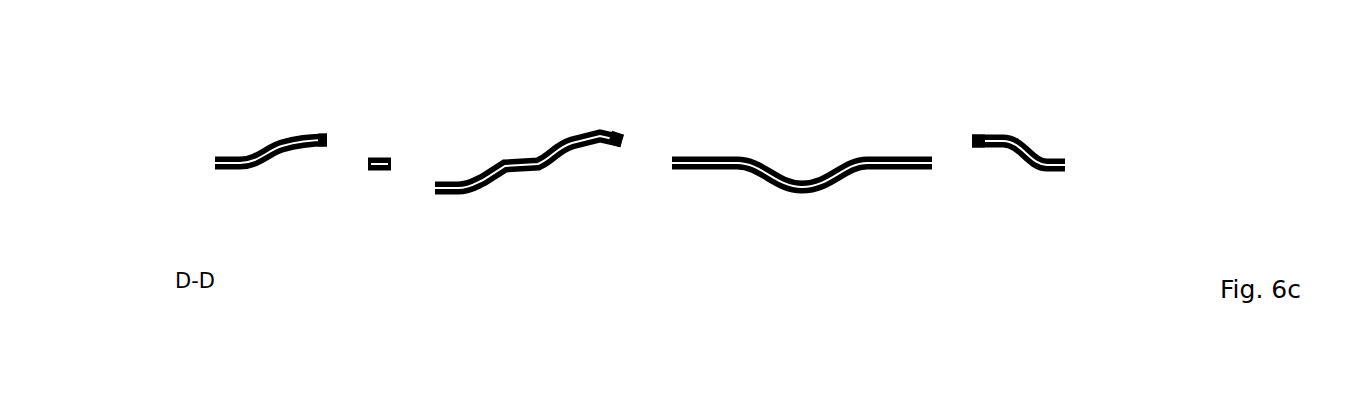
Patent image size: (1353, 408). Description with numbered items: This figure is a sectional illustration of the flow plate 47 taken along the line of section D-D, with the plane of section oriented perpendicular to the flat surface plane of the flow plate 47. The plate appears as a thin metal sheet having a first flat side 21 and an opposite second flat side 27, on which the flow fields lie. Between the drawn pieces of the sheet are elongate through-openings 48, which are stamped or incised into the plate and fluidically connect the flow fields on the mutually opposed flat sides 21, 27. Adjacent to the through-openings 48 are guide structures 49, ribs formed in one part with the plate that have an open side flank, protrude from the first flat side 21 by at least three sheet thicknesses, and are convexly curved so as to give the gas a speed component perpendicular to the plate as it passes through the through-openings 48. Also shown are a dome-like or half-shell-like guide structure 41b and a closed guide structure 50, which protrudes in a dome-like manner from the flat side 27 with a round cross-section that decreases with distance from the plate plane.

The first flat side 21 is at (220, 157).
The second flat side 27 is at (238, 171).
The guide structure 41b is at (463, 194).
The flow plate 47 is at (1100, 137).
The through-opening 48 is at (345, 145).
The guide structure 49 is at (263, 133).
The closed guide structure 50 is at (800, 193).